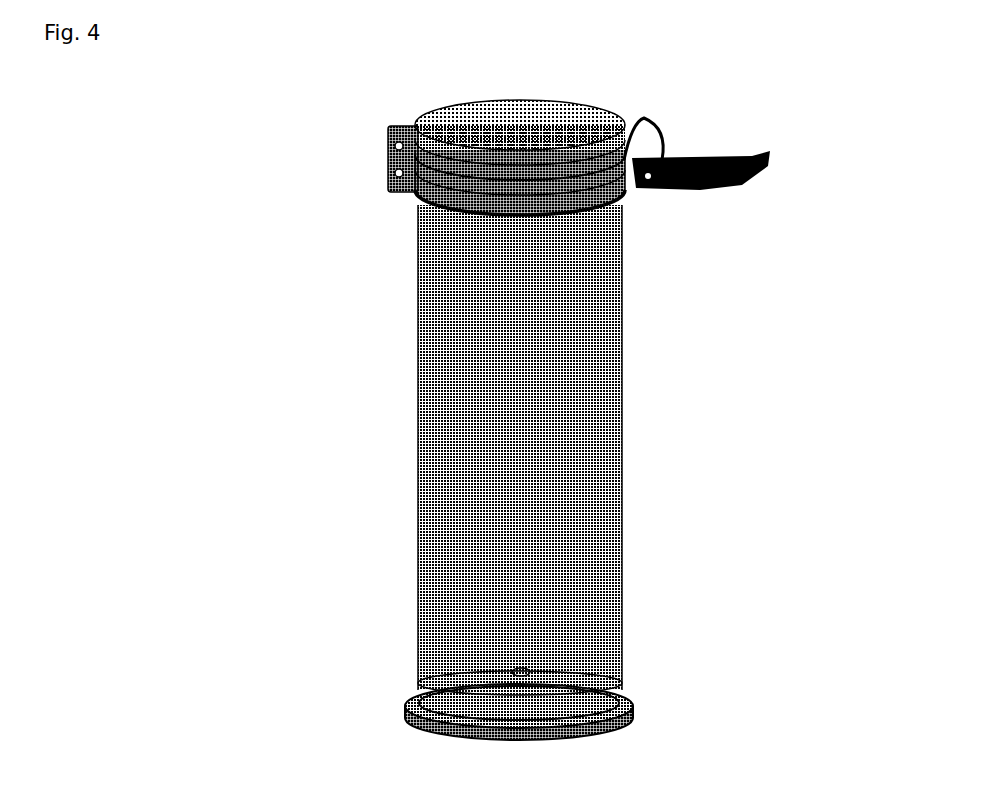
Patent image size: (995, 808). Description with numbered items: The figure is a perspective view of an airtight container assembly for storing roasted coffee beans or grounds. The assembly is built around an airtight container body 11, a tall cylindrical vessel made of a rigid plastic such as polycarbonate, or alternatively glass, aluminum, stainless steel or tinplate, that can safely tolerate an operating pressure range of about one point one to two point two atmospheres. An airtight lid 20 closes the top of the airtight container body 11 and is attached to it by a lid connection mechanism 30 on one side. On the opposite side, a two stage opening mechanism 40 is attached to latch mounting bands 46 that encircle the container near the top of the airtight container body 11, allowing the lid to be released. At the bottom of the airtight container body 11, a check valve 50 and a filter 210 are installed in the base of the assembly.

The airtight container body 11 is at (596, 387).
The airtight lid 20 is at (666, 128).
The lid connection mechanism 30 is at (390, 165).
The two stage opening mechanism 40 is at (748, 181).
The latch mounting bands 46 is at (655, 204).
The check valve 50 is at (530, 686).
The filter 210 is at (711, 636).